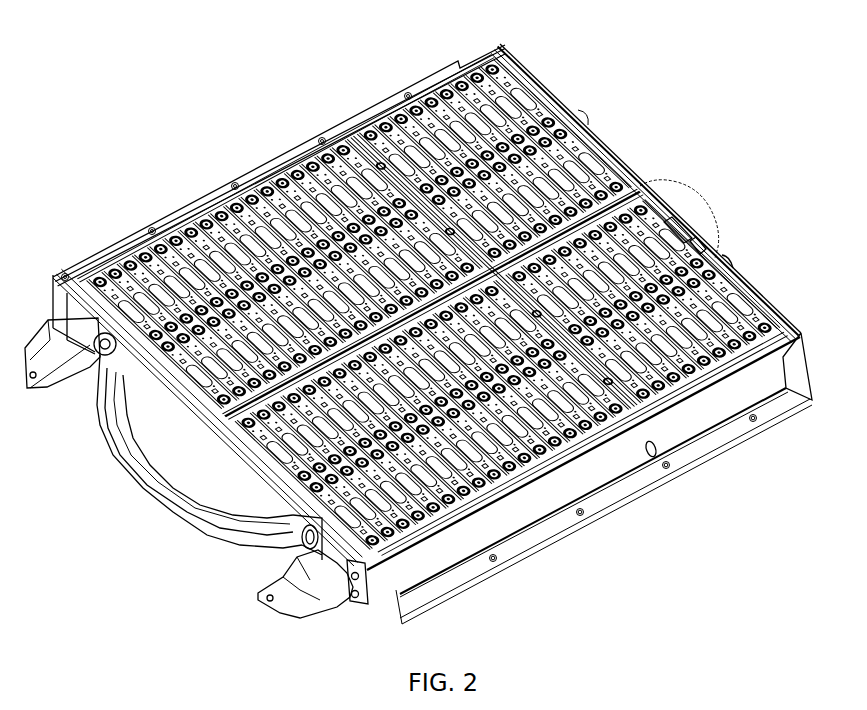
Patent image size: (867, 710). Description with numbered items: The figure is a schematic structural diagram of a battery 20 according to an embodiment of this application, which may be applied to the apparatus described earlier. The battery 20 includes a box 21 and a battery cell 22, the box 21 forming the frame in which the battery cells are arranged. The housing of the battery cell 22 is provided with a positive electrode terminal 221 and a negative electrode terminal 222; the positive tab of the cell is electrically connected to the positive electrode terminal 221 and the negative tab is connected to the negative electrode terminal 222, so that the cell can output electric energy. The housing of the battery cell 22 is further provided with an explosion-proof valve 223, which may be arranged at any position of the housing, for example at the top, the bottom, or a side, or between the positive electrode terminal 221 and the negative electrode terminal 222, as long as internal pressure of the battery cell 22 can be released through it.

The battery 20 is at (436, 321).
The box 21 is at (772, 312).
The battery cell 22 is at (737, 223).
The positive electrode terminal 221 is at (766, 251).
The negative electrode terminal 222 is at (668, 208).
The explosion-proof valve 223 is at (700, 240).